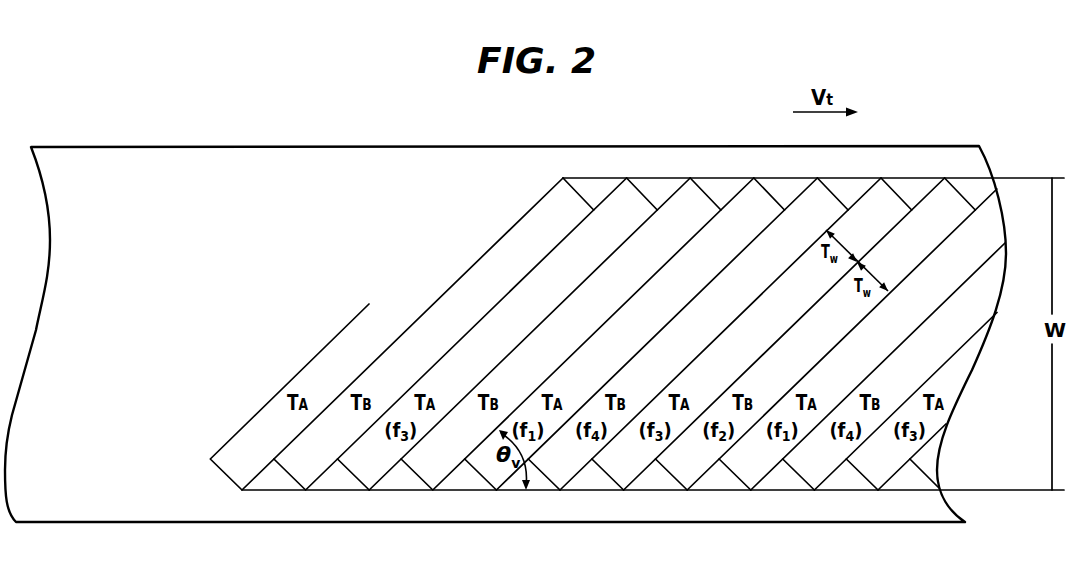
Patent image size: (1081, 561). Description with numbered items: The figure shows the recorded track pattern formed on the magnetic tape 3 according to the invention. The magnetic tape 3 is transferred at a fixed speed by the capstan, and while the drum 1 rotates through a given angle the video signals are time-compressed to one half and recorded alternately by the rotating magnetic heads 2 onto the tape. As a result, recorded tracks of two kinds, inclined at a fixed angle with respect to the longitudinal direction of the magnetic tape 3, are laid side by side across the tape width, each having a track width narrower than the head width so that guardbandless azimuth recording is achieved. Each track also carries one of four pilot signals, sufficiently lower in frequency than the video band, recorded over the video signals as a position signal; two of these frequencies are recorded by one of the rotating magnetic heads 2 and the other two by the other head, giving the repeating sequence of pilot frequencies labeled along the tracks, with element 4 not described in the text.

The magnetic tape 3 is at (914, 147).
The drum 1 is at (386, 334).
The rotating magnetic heads 2 is at (577, 334).
The track recorded with pilot frequency f4 4 is at (450, 334).